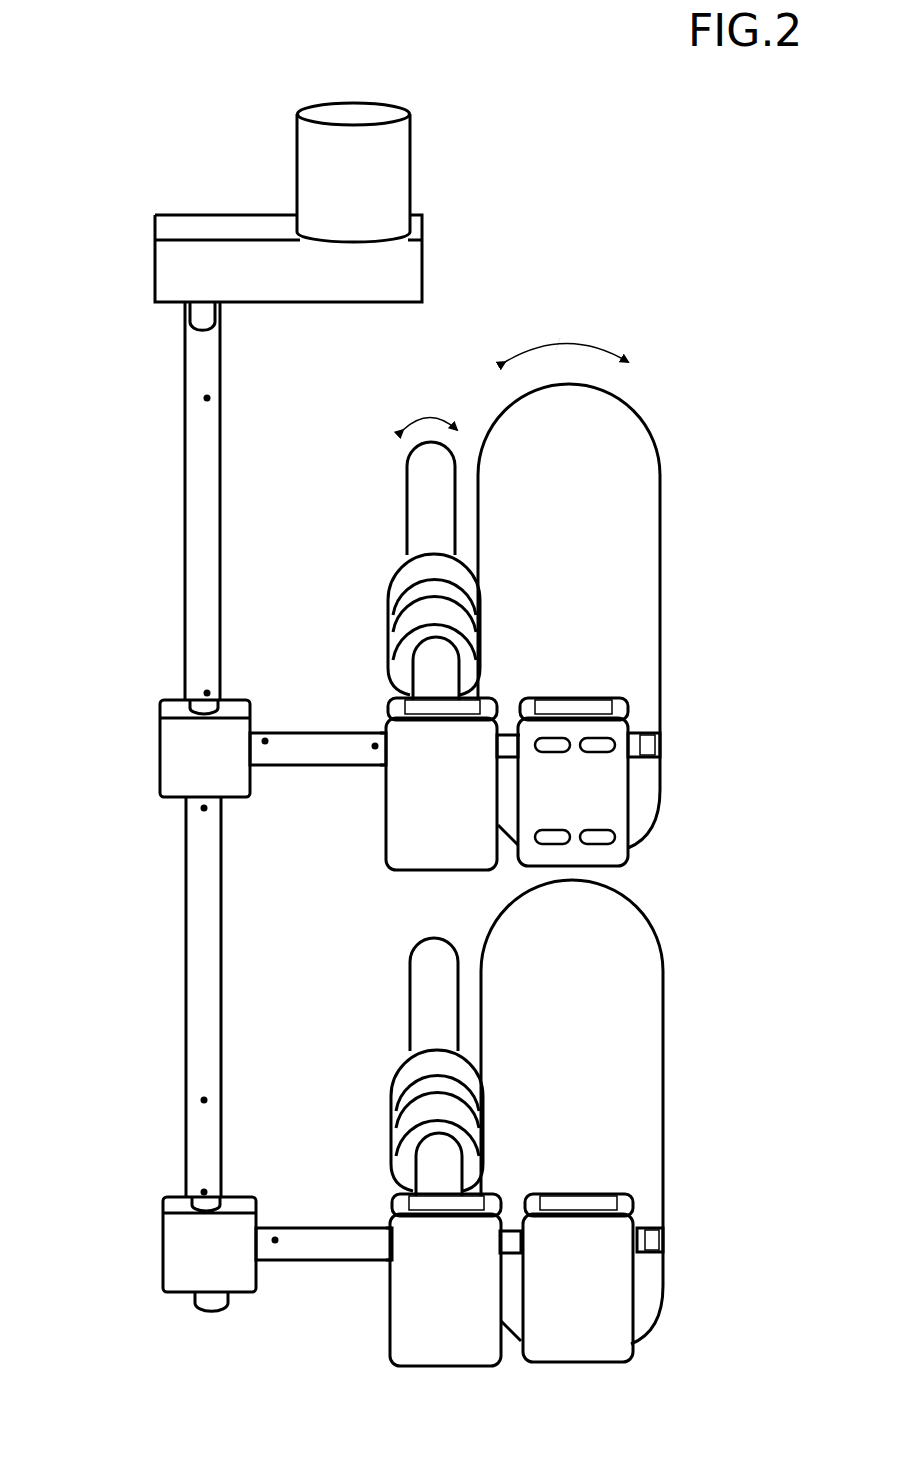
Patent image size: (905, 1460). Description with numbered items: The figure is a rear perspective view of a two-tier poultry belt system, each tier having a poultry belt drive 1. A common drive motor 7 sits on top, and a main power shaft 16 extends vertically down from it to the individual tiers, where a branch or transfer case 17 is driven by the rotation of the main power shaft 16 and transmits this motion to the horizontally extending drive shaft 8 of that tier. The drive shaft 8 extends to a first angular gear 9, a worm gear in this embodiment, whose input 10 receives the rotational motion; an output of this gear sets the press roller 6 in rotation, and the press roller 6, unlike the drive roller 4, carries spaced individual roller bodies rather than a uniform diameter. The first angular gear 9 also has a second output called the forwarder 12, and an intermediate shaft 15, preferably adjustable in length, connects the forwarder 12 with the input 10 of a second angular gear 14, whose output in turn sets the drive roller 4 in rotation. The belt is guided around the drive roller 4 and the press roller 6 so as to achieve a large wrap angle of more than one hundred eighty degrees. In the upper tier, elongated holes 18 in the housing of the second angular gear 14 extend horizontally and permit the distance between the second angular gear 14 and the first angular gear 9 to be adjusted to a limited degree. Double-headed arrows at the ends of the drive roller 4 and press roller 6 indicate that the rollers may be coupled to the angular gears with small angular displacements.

The poultry belt drive 1 is at (715, 256).
The drive roller 4 is at (630, 524).
The press roller 6 is at (400, 509).
The drive motor 7 is at (370, 192).
The drive shaft 8 is at (290, 752).
The angular gear 9 is at (410, 814).
The input 10 is at (385, 736).
The forwarder 12 is at (650, 736).
The second angular gear 14 is at (595, 802).
The intermediate shaft 15 is at (513, 752).
The main power shaft 16 is at (205, 567).
The transfer case 17 is at (190, 762).
The elongated holes 18 is at (597, 745).